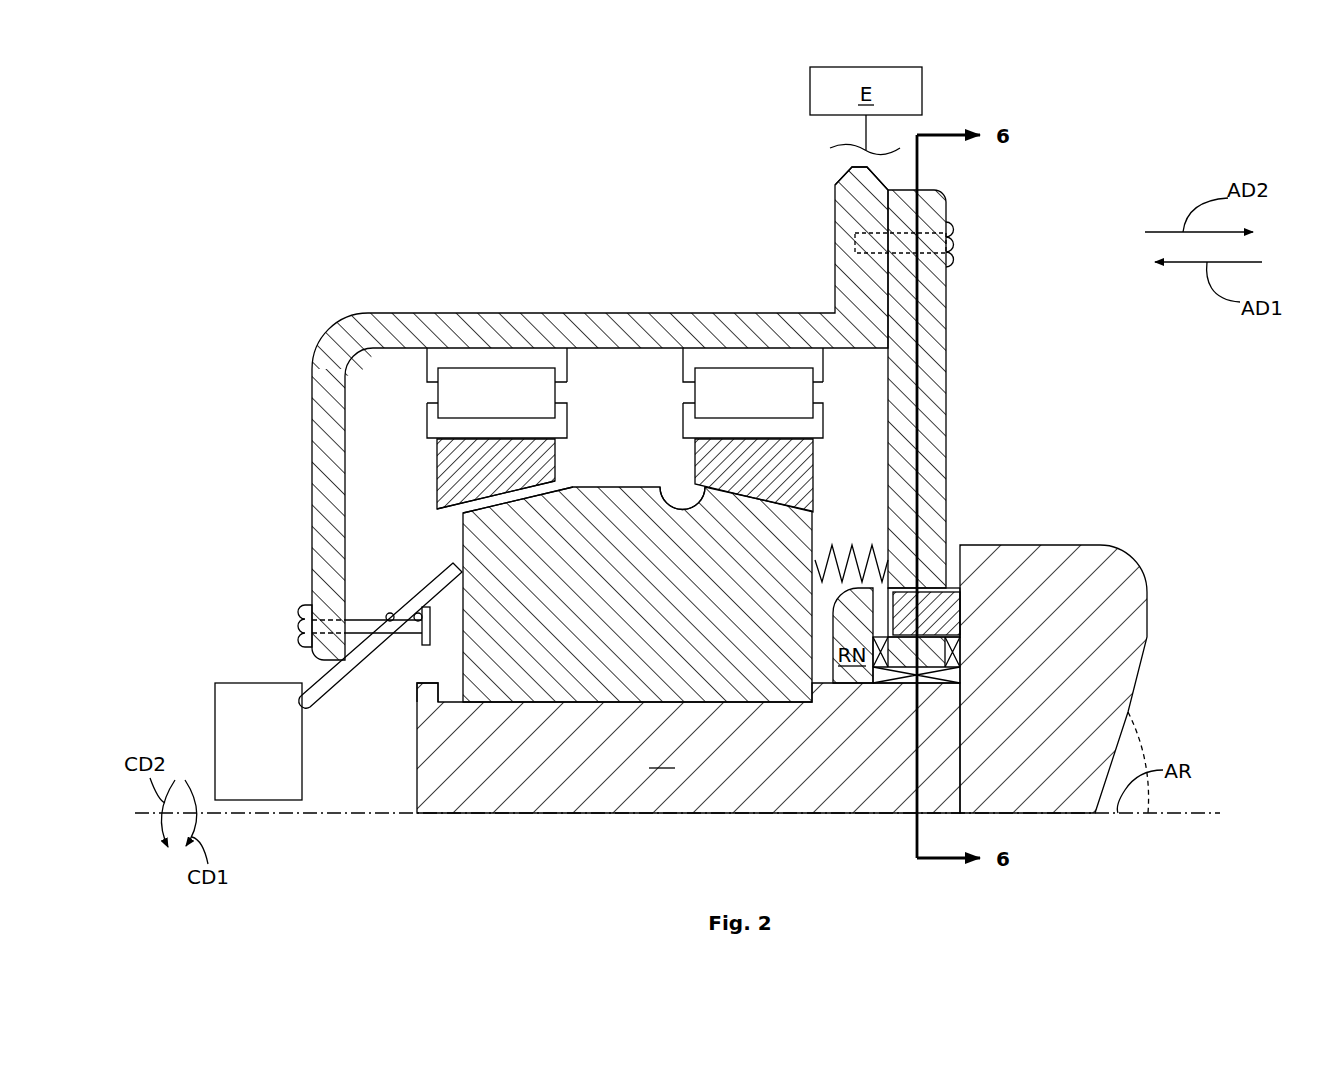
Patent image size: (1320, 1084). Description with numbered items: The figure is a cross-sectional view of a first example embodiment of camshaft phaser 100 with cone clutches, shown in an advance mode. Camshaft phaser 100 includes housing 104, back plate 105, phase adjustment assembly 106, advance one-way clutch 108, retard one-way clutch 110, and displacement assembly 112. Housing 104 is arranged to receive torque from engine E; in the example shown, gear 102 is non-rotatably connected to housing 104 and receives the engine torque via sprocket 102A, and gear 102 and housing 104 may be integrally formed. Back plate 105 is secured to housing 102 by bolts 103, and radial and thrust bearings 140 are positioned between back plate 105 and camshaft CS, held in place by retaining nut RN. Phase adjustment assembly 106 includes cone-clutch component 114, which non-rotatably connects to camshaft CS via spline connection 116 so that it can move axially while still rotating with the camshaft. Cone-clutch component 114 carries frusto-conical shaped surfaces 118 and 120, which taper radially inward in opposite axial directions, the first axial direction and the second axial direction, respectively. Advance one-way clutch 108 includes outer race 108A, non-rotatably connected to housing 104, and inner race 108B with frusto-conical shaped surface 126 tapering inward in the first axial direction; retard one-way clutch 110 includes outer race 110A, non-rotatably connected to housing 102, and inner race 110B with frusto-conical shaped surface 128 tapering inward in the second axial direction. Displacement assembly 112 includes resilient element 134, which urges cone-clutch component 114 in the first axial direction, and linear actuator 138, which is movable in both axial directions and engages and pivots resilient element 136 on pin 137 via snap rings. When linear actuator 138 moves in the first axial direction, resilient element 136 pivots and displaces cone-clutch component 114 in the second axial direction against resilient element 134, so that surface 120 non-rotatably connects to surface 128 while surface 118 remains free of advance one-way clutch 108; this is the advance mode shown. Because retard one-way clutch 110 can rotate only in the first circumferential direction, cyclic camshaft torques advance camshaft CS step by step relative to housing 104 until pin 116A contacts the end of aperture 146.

The camshaft phaser 100 is at (343, 152).
The gear 102 is at (828, 200).
The sprocket 102A is at (853, 167).
The bolts 103 is at (952, 214).
The housing 104 is at (580, 308).
The back plate 105 is at (950, 288).
The phase adjustment assembly 106 is at (396, 497).
The advance one-way clutch 108 is at (403, 373).
The outer race 108A is at (465, 346).
The inner race 108B is at (530, 407).
The retard one-way clutch 110 is at (726, 385).
The outer race 110A is at (722, 346).
The inner race 110B is at (785, 408).
The displacement assembly 112 is at (223, 590).
The cone-clutch component 114 is at (545, 706).
The spline connection 116 is at (427, 693).
The pin 116A is at (952, 584).
The frusto-conical shaped surface 118 is at (515, 503).
The frusto-conical shaped surface 120 is at (786, 494).
The frusto-conical shaped surface 126 is at (440, 522).
The frusto-conical shaped surface 128 is at (664, 487).
The resilient element 134 is at (851, 541).
The resilient element 136 is at (361, 669).
The pin 137 is at (296, 622).
The linear actuator 138 is at (236, 679).
The radial and thrust bearings 140 is at (953, 678).
The aperture 146 is at (929, 580).